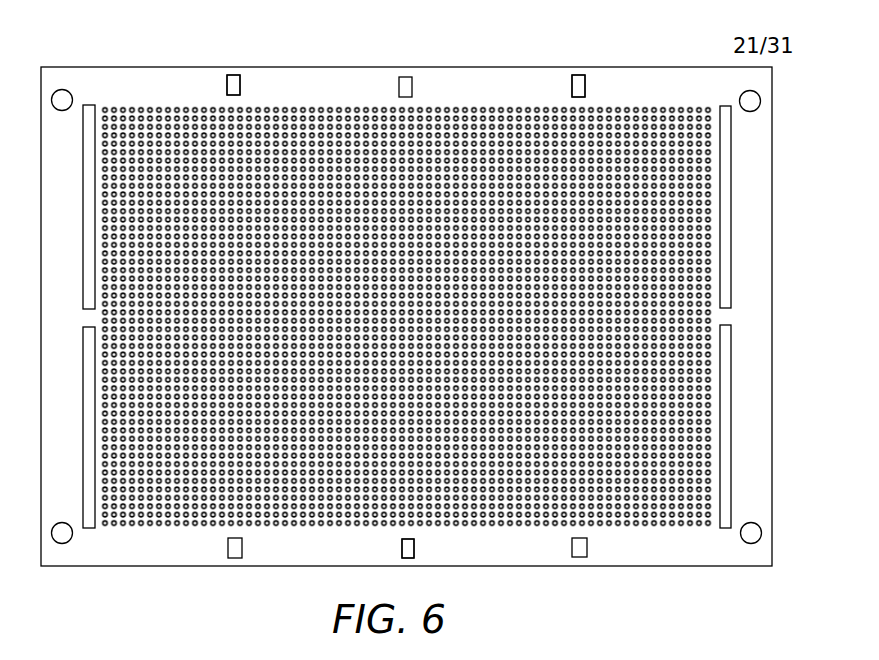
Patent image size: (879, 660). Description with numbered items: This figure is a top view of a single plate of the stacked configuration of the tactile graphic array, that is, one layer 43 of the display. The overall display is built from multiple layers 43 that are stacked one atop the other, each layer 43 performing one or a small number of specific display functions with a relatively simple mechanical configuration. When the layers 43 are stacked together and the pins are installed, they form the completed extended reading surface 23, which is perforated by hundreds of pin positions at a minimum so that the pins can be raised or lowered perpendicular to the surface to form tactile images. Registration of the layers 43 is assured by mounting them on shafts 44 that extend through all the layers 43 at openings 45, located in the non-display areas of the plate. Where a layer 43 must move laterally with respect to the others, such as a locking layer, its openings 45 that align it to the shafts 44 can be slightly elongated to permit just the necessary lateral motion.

The reading surface 23 is at (646, 80).
The layer 43 is at (162, 550).
The shaft 44 is at (232, 78).
The opening 45 is at (238, 82).